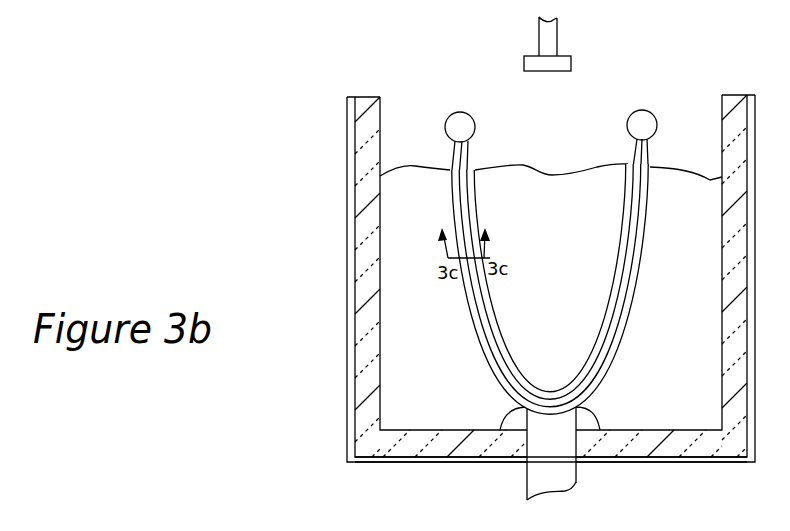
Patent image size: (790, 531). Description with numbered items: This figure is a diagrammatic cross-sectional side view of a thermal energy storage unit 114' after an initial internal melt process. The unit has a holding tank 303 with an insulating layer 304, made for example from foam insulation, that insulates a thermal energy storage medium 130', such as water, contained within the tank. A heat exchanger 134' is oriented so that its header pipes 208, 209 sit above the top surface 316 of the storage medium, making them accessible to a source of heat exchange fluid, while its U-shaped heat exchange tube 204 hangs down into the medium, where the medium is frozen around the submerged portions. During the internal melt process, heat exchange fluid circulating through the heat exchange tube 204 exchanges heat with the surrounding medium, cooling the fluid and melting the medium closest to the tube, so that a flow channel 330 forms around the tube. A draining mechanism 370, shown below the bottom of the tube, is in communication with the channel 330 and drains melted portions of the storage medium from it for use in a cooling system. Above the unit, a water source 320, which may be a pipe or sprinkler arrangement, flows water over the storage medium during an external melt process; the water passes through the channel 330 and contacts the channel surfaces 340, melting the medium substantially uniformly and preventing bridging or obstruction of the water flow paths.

The thermal energy storage unit 114' is at (492, 290).
The heat exchanger 134' is at (493, 250).
The thermal energy storage medium 130' is at (551, 242).
The heat exchange tube 204 is at (562, 305).
The header pipe 208 is at (451, 115).
The header pipe 209 is at (643, 110).
The holding tank 303 is at (345, 393).
The insulating layer 304 is at (395, 463).
The top surface 316 is at (549, 174).
The water source 320 is at (566, 62).
The flow channel 330 is at (517, 403).
The channel surfaces 340 is at (550, 391).
The draining mechanism 370 is at (562, 477).